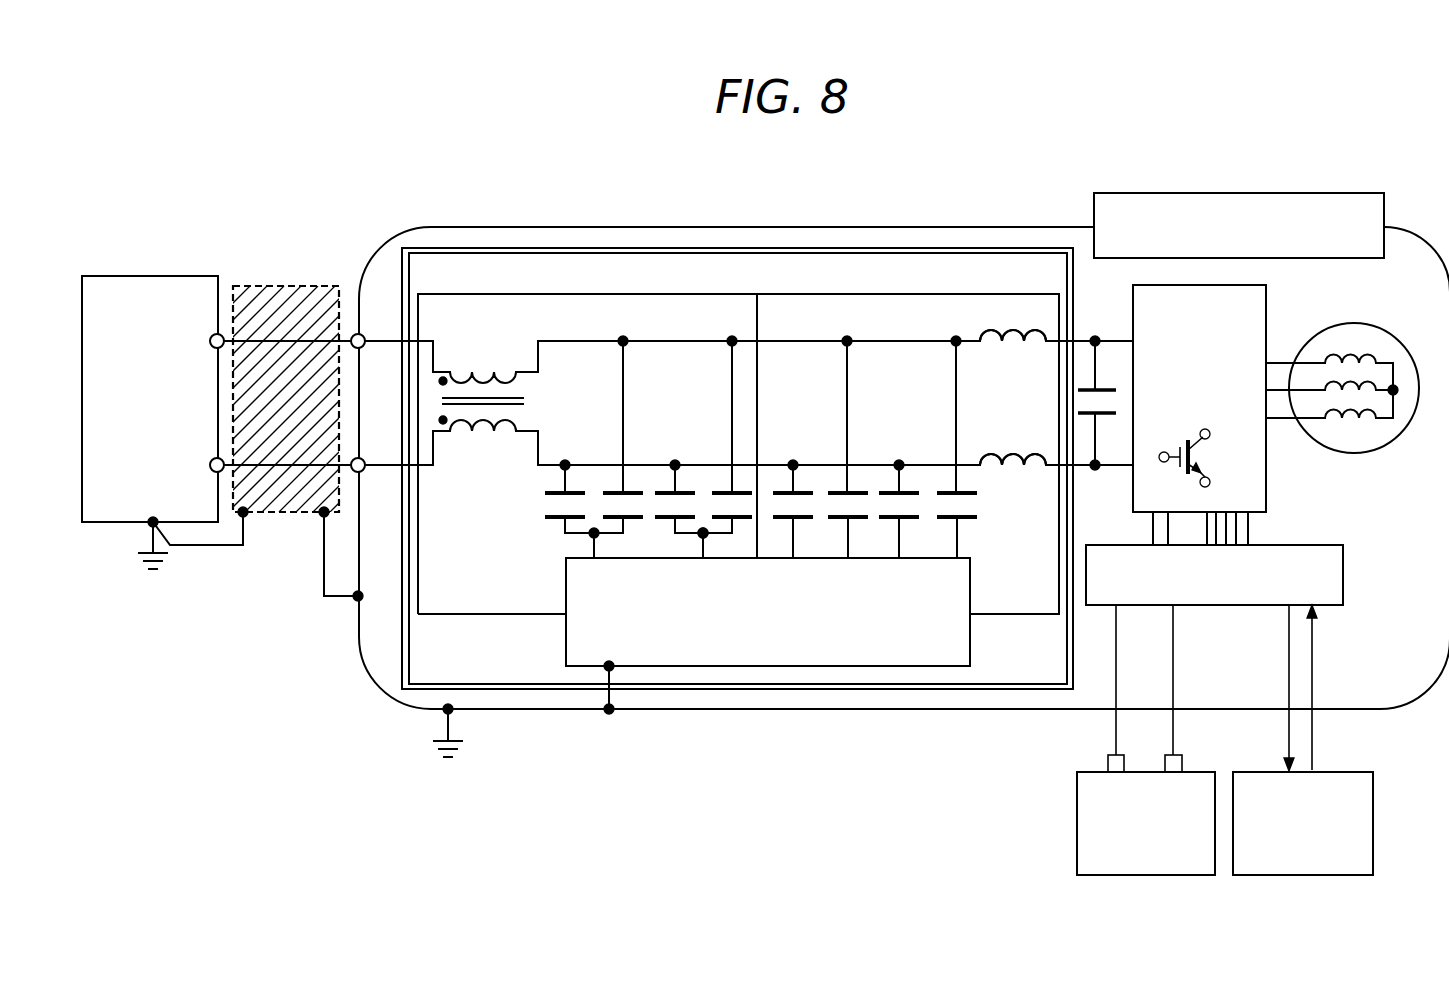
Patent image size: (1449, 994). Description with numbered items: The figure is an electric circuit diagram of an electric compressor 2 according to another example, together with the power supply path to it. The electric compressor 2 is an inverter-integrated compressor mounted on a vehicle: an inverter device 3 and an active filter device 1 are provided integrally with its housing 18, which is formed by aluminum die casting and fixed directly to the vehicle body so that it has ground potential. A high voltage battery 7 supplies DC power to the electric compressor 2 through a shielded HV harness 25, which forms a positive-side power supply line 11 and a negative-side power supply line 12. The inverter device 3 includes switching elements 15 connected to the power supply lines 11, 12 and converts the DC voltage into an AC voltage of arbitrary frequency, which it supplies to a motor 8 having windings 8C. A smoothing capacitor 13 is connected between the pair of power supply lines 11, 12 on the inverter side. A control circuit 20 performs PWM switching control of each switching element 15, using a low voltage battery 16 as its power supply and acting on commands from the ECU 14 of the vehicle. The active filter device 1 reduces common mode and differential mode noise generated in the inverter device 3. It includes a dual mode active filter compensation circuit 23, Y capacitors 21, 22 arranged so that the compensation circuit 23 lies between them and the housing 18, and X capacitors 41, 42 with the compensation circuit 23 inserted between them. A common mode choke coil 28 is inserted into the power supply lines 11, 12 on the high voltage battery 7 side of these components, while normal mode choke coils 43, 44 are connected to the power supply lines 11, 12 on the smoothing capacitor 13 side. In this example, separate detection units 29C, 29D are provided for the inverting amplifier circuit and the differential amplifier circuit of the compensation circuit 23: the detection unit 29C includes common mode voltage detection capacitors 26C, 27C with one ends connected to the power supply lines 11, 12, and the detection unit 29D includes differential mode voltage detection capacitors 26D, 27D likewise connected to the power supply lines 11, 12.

The active filter device 1 is at (806, 250).
The electric compressor 2 is at (1412, 226).
The inverter device 3 is at (1267, 302).
The high voltage battery 7 is at (148, 276).
The motor 8 is at (1405, 335).
The motor coil 8C is at (1360, 420).
The positive-side power supply line 11 is at (702, 338).
The negative-side power supply line 12 is at (597, 463).
The smoothing capacitor 13 is at (1115, 388).
The ECU 14 is at (1375, 828).
The switching element 15 is at (1207, 470).
The low voltage battery 16 is at (1077, 840).
The housing 18 is at (390, 698).
The control circuit 20 is at (1345, 576).
The Y capacitor 21 is at (630, 518).
The Y capacitor 22 is at (556, 519).
The dual mode active filter compensation circuit 23 is at (723, 667).
The shielded HV harness 25 is at (342, 288).
The common mode voltage detection capacitor 26C is at (738, 488).
The differential mode voltage detection capacitor 26D is at (975, 522).
The common mode voltage detection capacitor 27C is at (663, 490).
The differential mode voltage detection capacitor 27D is at (916, 490).
The common mode choke coil 28 is at (468, 435).
The detection unit 29C is at (692, 543).
The detection unit 29D is at (972, 538).
The X capacitor 41 is at (835, 490).
The X capacitor 42 is at (800, 518).
The normal mode choke coil 43 is at (1018, 338).
The normal mode choke coil 44 is at (1016, 470).